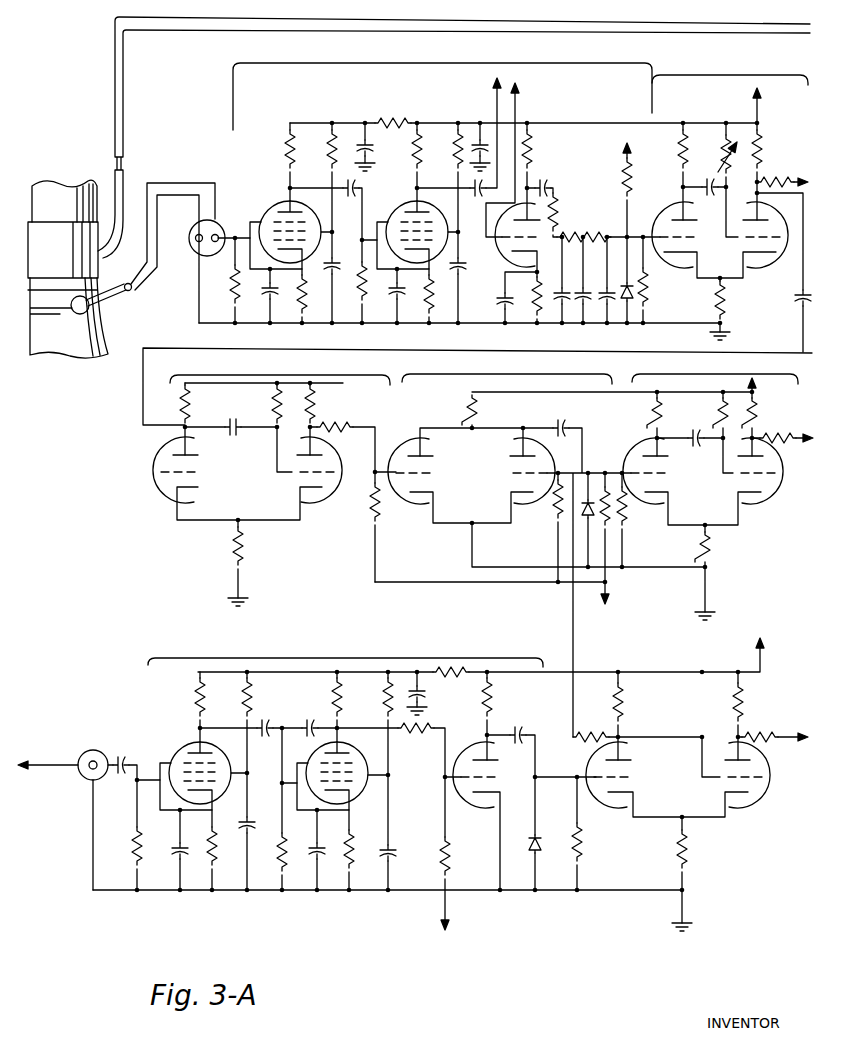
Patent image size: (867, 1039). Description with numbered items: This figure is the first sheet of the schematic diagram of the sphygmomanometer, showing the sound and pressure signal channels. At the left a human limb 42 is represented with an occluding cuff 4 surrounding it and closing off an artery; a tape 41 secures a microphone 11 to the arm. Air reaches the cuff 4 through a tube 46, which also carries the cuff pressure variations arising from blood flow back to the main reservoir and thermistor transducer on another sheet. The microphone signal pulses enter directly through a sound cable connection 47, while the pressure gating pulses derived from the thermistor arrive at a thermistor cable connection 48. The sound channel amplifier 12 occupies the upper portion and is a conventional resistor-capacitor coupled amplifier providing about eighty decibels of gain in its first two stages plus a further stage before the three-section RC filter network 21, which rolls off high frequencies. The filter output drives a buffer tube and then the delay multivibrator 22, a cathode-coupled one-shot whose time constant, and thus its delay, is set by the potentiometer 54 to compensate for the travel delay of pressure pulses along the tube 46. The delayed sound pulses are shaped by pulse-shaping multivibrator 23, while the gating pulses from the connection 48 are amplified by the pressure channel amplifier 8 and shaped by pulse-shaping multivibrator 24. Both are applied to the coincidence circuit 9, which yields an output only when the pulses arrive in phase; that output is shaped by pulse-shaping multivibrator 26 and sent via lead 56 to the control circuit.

The occluding cuff 4 is at (99, 263).
The pressure channel amplifier 8 is at (394, 788).
The coincidence circuit 9 is at (576, 545).
The microphone 11 is at (90, 305).
The sound channel amplifier 12 is at (566, 65).
The 3-section RC filter network 21 is at (597, 314).
The delay multivibrator 22 is at (758, 69).
The pulse-shaping multivibrator 23 is at (477, 477).
The pulse-shaping multivibrator 24 is at (690, 787).
The pulse-shaping multivibrator 26 is at (718, 462).
The tape 41 is at (33, 310).
The human limb 42 is at (102, 194).
The tube 46 is at (125, 112).
The sound cable connection 47 is at (190, 257).
The thermistor cable connection 48 is at (82, 776).
The potentiometer 54 is at (713, 170).
The lead 56 is at (782, 430).